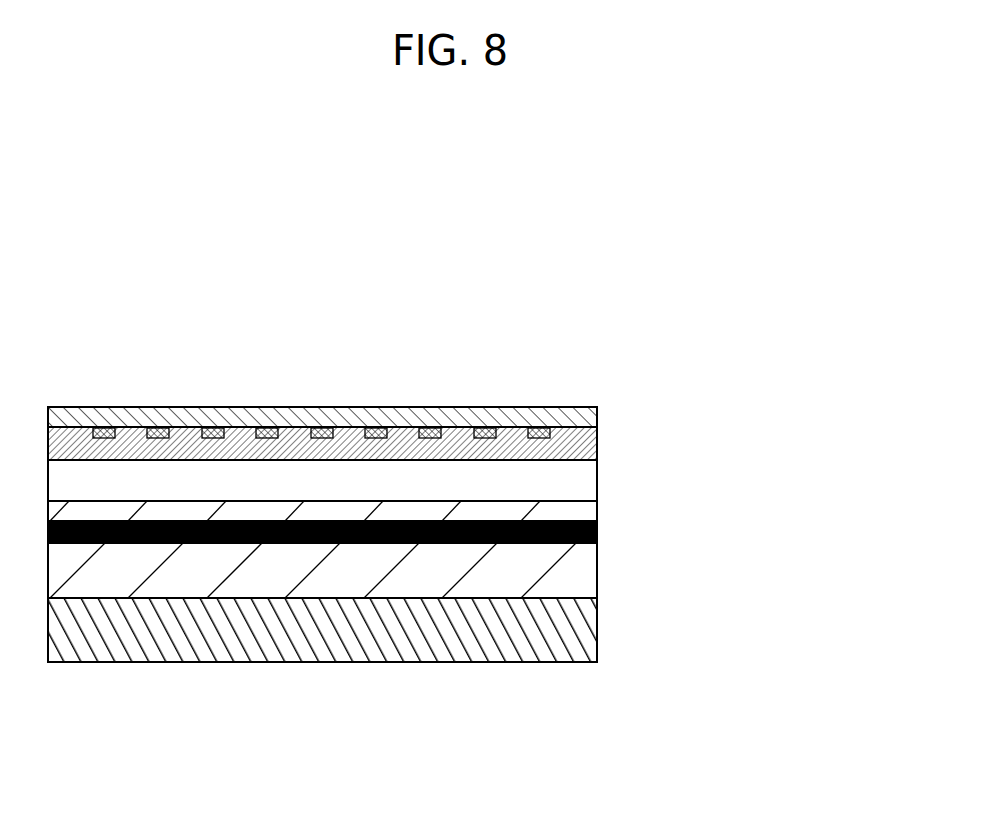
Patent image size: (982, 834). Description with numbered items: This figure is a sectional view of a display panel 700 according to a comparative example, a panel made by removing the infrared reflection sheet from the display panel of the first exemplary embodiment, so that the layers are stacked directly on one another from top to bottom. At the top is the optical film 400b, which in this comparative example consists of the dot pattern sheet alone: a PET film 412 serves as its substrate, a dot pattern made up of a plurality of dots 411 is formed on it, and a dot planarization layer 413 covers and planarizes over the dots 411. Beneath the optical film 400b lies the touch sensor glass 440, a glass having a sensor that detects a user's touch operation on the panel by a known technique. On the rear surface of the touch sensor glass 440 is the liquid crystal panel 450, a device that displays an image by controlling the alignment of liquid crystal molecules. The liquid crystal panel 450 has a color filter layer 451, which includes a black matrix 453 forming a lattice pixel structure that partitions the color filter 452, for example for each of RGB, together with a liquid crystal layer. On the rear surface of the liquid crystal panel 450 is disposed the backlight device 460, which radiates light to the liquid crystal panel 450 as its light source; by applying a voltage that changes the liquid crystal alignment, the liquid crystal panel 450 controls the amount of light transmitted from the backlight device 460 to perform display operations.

The display panel 700 is at (463, 508).
The optical film 400b is at (416, 372).
The dots 411 is at (380, 432).
The PET film 412 is at (598, 408).
The dot planarization layer 413 is at (578, 440).
The touch sensor glass 440 is at (573, 482).
The liquid crystal panel 450 is at (401, 617).
The color filter layer 451 is at (362, 626).
The color filter 452 is at (416, 543).
The black matrix 453 is at (462, 543).
The backlight device 460 is at (363, 630).